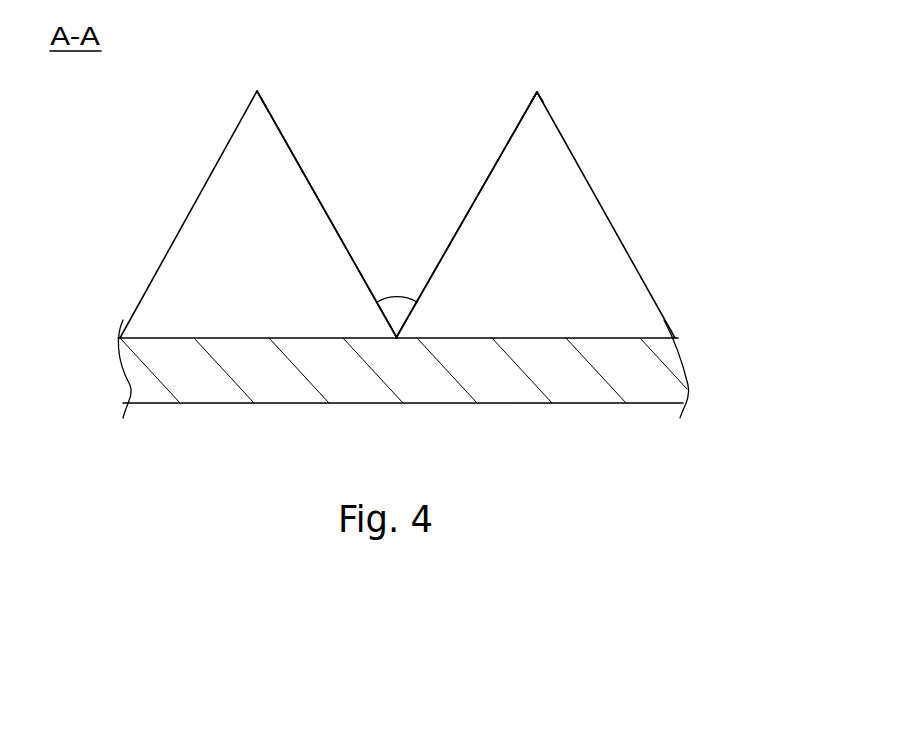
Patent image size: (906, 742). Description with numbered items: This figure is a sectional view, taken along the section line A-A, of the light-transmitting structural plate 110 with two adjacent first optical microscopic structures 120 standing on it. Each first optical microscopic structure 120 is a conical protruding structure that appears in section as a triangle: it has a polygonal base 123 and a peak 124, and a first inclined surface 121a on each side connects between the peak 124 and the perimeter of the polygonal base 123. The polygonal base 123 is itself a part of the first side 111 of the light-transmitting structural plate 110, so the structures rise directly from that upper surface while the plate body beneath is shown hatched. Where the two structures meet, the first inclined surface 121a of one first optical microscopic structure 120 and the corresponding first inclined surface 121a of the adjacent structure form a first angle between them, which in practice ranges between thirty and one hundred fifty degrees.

The light-transmitting structural plate 110 is at (650, 372).
The first side 111 is at (628, 337).
The first optical microscopic structure 120 is at (207, 217).
The first inclined surface 121a is at (490, 170).
The polygonal base 123 is at (549, 338).
The peak 124 is at (536, 90).